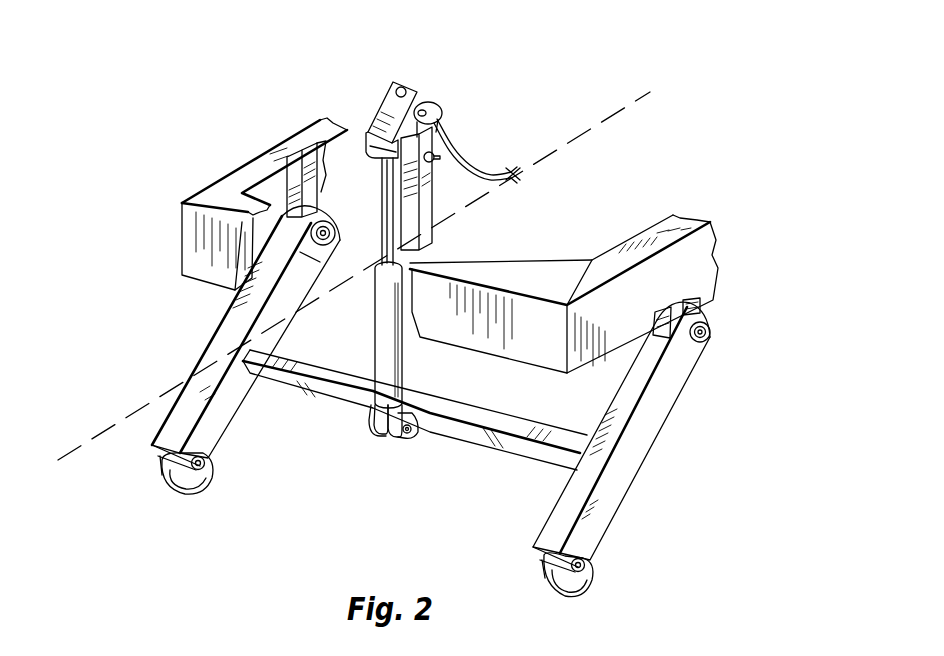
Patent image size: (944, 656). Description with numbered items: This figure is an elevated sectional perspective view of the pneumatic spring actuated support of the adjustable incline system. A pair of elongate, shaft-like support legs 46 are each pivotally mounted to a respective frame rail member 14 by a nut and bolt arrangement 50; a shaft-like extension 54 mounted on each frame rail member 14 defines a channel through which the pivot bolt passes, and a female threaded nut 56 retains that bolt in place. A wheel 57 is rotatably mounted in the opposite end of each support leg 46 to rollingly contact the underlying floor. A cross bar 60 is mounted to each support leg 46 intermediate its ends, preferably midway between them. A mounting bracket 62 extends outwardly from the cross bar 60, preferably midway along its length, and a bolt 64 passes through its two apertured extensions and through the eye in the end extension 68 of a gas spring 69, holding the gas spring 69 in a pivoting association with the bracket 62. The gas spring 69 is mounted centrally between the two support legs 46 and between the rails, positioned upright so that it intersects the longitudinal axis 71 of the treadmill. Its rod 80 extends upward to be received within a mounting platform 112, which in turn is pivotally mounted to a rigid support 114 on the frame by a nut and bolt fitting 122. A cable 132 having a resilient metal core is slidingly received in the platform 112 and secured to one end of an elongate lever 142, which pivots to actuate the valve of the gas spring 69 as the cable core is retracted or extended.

The frame rail member 14 is at (256, 172).
The support leg 46 is at (220, 347).
The nut and bolt arrangement 50 is at (330, 218).
The shaft-like extension 54 is at (304, 150).
The female threaded nut 56 is at (290, 248).
The wheel 57 is at (204, 493).
The cross bar 60 is at (286, 386).
The mounting bracket 62 is at (410, 437).
The bolt 64 is at (371, 433).
The end extension 68 is at (368, 420).
The gas spring 69 is at (395, 353).
The longitudinal axis 71 is at (112, 425).
The rod 80 is at (383, 207).
The mounting platform 112 is at (440, 107).
The rigid support 114 is at (420, 235).
The nut and bolt fitting 122 is at (456, 145).
The cable 132 is at (516, 172).
The lever 142 is at (397, 72).